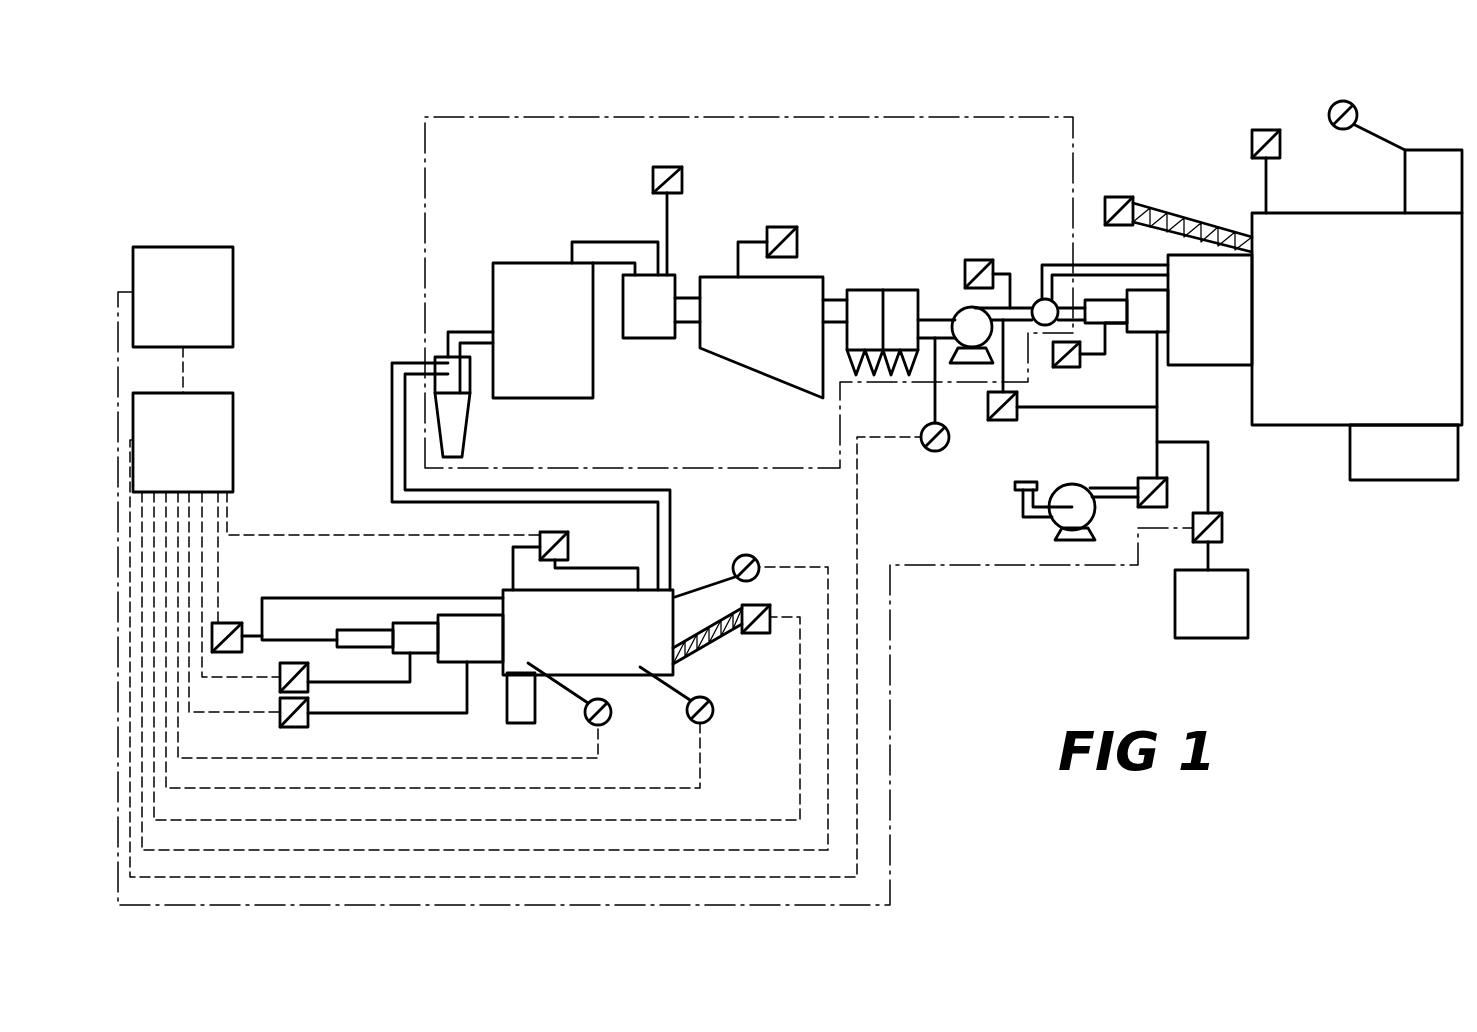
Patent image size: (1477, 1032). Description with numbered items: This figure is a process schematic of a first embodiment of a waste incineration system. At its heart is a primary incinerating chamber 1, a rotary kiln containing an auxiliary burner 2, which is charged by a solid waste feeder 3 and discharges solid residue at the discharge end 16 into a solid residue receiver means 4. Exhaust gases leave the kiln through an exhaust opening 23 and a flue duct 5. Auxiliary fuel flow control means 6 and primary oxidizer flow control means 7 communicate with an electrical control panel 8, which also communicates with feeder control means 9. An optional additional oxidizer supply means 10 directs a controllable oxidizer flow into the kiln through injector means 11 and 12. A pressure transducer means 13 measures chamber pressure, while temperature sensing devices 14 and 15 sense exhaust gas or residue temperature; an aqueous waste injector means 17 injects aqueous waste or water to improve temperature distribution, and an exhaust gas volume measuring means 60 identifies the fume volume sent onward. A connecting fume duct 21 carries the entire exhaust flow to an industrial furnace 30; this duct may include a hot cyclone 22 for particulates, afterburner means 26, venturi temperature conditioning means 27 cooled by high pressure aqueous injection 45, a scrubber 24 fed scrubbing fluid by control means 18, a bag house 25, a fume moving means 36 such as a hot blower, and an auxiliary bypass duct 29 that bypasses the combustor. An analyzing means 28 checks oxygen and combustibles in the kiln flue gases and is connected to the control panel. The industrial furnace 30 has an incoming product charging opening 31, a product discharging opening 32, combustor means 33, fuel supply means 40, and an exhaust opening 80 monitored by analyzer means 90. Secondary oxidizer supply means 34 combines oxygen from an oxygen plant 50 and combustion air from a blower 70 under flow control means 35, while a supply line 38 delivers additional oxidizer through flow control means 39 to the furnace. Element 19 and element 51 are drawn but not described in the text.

The primary incinerating chamber 1 is at (594, 646).
The auxiliary burner 2 is at (478, 650).
The solid waste feeder 3 is at (700, 645).
The solid residue receiver means 4 is at (529, 710).
The flue duct 5 is at (665, 506).
The auxiliary fuel flow control means 6 is at (279, 688).
The primary oxidizer flow control means 7 is at (279, 723).
The electrical control panel 8 is at (194, 454).
The feeder control means 9 is at (194, 308).
The additional oxidizer supply means 10 is at (238, 623).
The injector means 11 is at (362, 632).
The injector means 12 is at (405, 598).
The pressure transducer means 13 is at (710, 720).
The temperature sensing device 14 is at (755, 557).
The temperature sensing device 15 is at (607, 722).
The discharge end 16 is at (505, 676).
The aqueous waste injector means 17 is at (570, 547).
The control means 18 is at (779, 227).
The valve 19 is at (772, 625).
The connecting fume duct 21 is at (578, 112).
The hot cyclone 22 is at (468, 402).
The exhaust opening 23 is at (672, 598).
The scrubber 24 is at (777, 330).
The bag house 25 is at (890, 290).
The afterburner means 26 is at (562, 342).
The venturi temperature conditioning means 27 is at (666, 322).
The analyzing means 28 is at (925, 448).
The auxiliary bypass duct 29 is at (1032, 305).
The industrial furnace 30 is at (1377, 334).
The industrial incoming product charging opening 31 is at (1255, 230).
The industrial product discharging opening 32 is at (1419, 470).
The combustor means 33 is at (1220, 334).
The secondary oxidizer supply means 34 is at (1167, 420).
The flow control means 35 is at (1220, 513).
The fume moving means 36 is at (962, 308).
The supply line 38 is at (1135, 407).
The flow control means 39 is at (996, 420).
The fuel supply means 40 is at (1068, 367).
The high pressure aqueous injection 45 is at (667, 167).
The oxygen plant 50 is at (1227, 616).
The valve 51 is at (1252, 135).
The exhaust gas volume measuring means 60 is at (968, 260).
The blower 70 is at (1056, 525).
The exhaust opening 80 is at (1450, 202).
The analyzer means 90 is at (1333, 103).